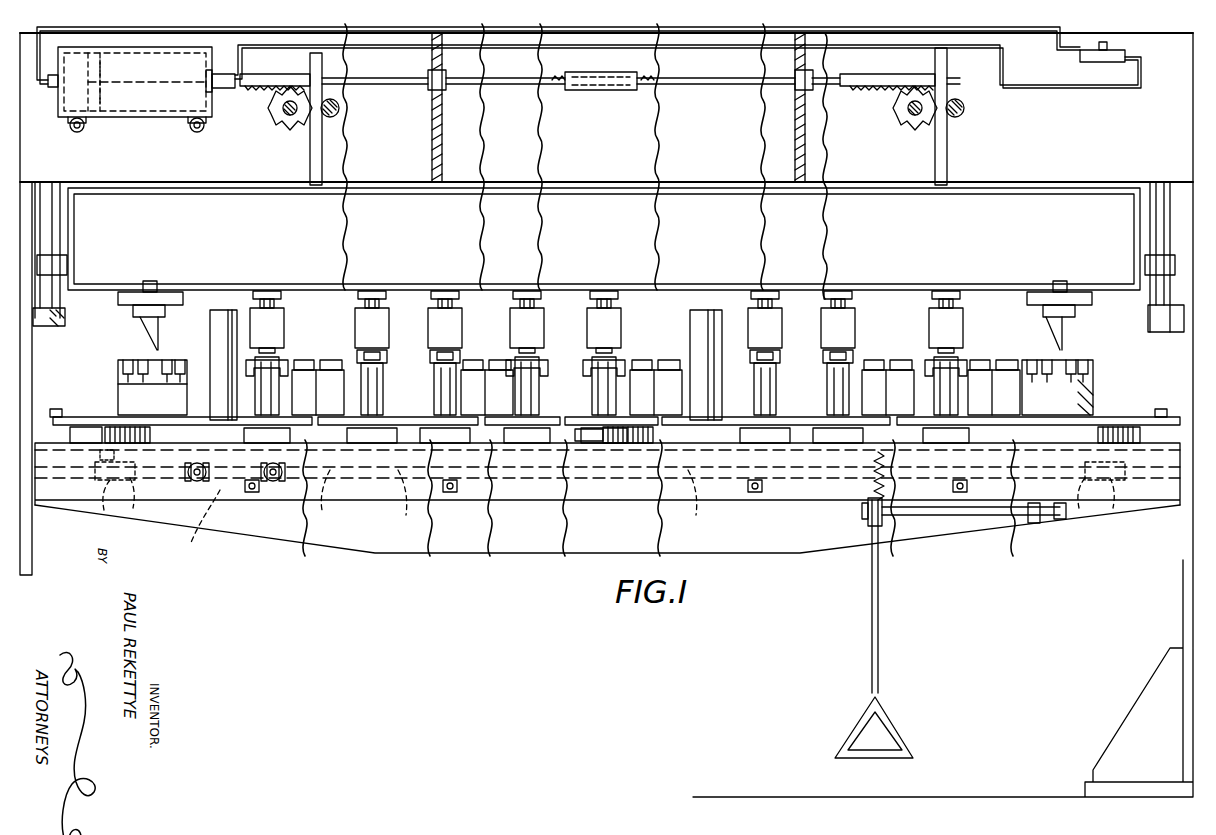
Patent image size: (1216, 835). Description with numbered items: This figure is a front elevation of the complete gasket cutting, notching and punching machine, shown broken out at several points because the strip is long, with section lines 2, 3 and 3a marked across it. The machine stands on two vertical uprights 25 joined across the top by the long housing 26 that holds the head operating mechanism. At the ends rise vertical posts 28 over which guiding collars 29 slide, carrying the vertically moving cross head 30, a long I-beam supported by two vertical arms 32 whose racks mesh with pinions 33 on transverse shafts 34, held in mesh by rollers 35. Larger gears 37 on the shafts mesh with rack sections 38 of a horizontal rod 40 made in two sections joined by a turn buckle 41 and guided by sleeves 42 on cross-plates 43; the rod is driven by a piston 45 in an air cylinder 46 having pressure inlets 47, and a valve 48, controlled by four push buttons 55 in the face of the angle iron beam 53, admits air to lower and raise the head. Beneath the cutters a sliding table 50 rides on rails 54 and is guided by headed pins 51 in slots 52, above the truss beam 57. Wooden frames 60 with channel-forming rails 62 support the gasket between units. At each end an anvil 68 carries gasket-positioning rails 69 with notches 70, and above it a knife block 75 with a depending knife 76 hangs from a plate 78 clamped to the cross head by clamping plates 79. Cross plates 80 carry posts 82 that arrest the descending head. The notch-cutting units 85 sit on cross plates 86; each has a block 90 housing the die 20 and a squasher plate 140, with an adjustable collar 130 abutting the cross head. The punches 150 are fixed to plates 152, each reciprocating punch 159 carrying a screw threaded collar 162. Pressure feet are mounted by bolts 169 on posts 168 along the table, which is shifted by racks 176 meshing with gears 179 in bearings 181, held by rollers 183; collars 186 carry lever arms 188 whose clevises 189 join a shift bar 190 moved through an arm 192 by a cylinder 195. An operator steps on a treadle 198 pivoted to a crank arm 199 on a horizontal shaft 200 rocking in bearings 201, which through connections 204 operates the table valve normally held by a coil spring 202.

The section line 2- 2 is at (1206, 342).
The section line 3- 3 is at (280, 539).
The section line 3a- 3a is at (907, 560).
The die 20 is at (276, 330).
The vertical uprights 25 is at (32, 555).
The housing 26 is at (91, 175).
The vertical posts 28 is at (58, 296).
The guiding collars 29 is at (55, 265).
The cross head 30 is at (193, 205).
The vertical arms 32 is at (322, 148).
The pinions 33 is at (310, 120).
The transverse shafts 34 is at (286, 112).
The rollers 35 is at (340, 108).
The gears 37 is at (272, 118).
The rack section 38 is at (250, 78).
The horizontal rod 40 is at (508, 83).
The turn buckle 41 is at (622, 90).
The sleeves 42 is at (445, 90).
The cross-plates 43 is at (442, 132).
The piston 45 is at (86, 110).
The air cylinder 46 is at (162, 117).
The pressure inlets 47 is at (52, 84).
The valve 48 is at (1125, 56).
The table 50 is at (181, 417).
The headed pins 51 is at (52, 435).
The slots 52 is at (73, 419).
The angle iron beam 53 is at (535, 487).
The rails 54 is at (356, 443).
The push buttons 55 is at (245, 490).
The truss beam 57 is at (362, 553).
The wooden frames 60 is at (304, 363).
The rails 62 is at (340, 362).
The anvil 68 is at (118, 400).
The gasket-positioning rails 69 is at (118, 369).
The notches 70 is at (160, 358).
The knife block 75 is at (165, 305).
The knife 76 is at (156, 334).
The plate 78 is at (128, 296).
The clamping plates 79 is at (160, 284).
The cross plates 80 is at (220, 450).
The posts 82 is at (217, 308).
The notch-cutting units 85 is at (298, 324).
The cross plate 86 is at (225, 458).
The block 90 is at (290, 333).
The adjustable collar 130 is at (266, 295).
The plate 140 is at (665, 375).
The punches 150 is at (385, 325).
The plate 152 is at (463, 445).
The reciprocating punch 159 is at (437, 356).
The screw threaded collar 162 is at (358, 293).
The posts 168 is at (280, 388).
The bolts 169 is at (378, 366).
The racks 176 is at (100, 447).
The gear 179 is at (140, 430).
The bearing 181 is at (130, 443).
The rollers 183 is at (80, 445).
The collar 186 is at (95, 471).
The lever arm 188 is at (647, 506).
The clevises 189 is at (609, 496).
The shift bar 190 is at (538, 501).
The arm 192 is at (334, 500).
The cylinder 195 is at (200, 526).
The treadle 198 is at (878, 660).
The crank arm 199 is at (866, 518).
The horizontal shaft 200 is at (985, 518).
The bearings 201 is at (886, 528).
The coil spring 202 is at (873, 472).
The connections 204 is at (1056, 520).